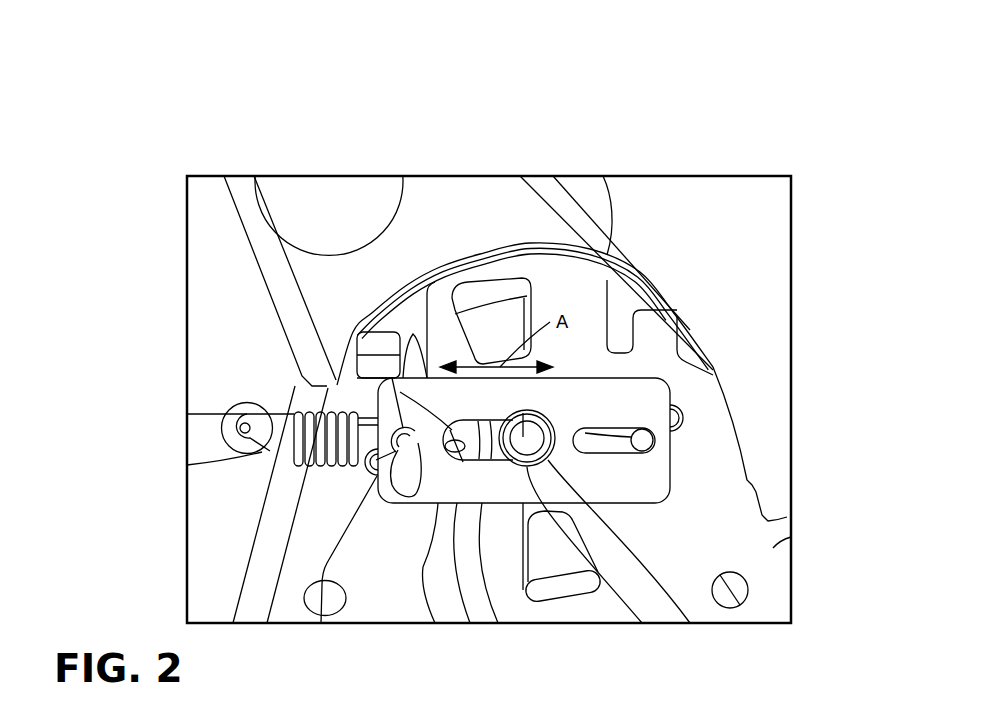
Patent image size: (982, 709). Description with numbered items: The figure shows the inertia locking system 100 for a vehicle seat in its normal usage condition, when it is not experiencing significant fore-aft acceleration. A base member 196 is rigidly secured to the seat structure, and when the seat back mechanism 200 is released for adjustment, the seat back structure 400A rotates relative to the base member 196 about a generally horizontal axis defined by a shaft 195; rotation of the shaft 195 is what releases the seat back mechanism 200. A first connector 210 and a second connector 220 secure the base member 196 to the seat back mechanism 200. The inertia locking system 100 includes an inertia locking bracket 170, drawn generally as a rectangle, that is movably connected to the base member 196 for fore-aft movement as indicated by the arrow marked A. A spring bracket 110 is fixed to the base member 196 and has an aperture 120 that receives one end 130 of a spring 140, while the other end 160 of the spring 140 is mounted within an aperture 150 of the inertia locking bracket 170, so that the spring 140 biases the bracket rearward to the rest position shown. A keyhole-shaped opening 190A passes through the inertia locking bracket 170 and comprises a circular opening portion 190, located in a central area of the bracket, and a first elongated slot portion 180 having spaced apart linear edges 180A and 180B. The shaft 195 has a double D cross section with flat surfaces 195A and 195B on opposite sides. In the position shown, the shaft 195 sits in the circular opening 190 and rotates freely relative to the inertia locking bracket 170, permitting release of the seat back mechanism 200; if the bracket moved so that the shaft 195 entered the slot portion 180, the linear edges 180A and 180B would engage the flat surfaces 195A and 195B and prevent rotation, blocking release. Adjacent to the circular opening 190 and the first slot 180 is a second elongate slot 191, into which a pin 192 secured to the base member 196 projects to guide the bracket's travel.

The inertia locking system 100 is at (378, 482).
The spring bracket 110 is at (205, 435).
The aperture 120 is at (240, 403).
The spring end 130 is at (293, 462).
The spring 140 is at (378, 460).
The aperture 150 is at (405, 497).
The spring end 160 is at (321, 623).
The inertia locking bracket 170 is at (435, 623).
The first elongated slot portion 180 is at (498, 623).
The linear edge 180A is at (450, 430).
The linear edge 180B is at (392, 378).
The circular opening portion 190 is at (690, 623).
The keyhole-shaped opening 190A is at (470, 623).
The second elongate slot 191 is at (618, 427).
The pin 192 is at (656, 433).
The shaft 195 is at (522, 410).
The flat surface 195A is at (550, 408).
The flat surface 195B is at (642, 623).
The base member 196 is at (775, 548).
The seat back mechanism 200 is at (262, 324).
The first connector 210 is at (473, 297).
The second connector 220 is at (566, 590).
The seat back structure 400A is at (465, 192).